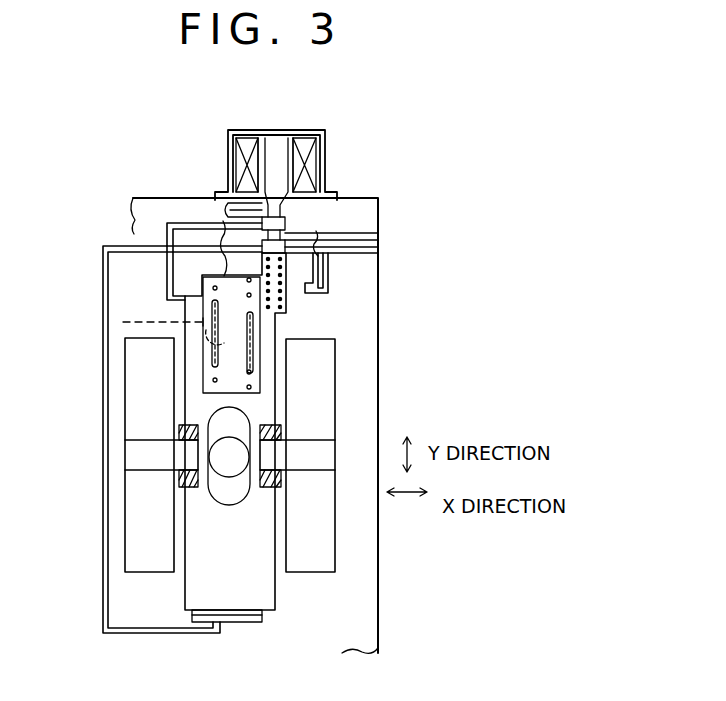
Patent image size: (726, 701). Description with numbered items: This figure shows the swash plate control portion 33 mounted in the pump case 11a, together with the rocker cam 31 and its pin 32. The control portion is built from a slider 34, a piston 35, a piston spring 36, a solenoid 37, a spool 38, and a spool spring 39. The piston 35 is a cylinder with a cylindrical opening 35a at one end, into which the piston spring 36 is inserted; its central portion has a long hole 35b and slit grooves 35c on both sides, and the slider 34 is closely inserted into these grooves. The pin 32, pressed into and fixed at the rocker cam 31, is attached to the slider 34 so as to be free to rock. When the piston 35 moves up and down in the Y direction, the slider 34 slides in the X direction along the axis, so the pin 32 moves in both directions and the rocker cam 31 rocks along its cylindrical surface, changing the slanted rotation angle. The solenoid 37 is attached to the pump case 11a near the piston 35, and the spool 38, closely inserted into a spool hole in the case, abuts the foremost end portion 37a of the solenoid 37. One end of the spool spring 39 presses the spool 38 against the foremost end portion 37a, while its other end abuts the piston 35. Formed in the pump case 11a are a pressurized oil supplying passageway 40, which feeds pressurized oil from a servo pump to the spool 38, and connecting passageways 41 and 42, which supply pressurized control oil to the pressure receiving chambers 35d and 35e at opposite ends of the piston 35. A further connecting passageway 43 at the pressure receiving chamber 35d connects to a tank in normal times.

The pump case 11a is at (367, 348).
The rocker cam 31 is at (135, 560).
The pin 32 is at (135, 455).
The swash plate control portion 33 is at (348, 155).
The slider 34 is at (283, 423).
The piston 35 is at (265, 588).
The cylindrical opening 35a is at (123, 322).
The long hole 35b is at (180, 425).
The slit grooves 35c is at (190, 488).
The pressure receiving chamber 35d is at (225, 296).
The pressure receiving chamber 35e is at (246, 622).
The piston spring 36 is at (250, 362).
The solenoid 37 is at (275, 131).
The foremost end portion 37a is at (290, 203).
The spool 38 is at (287, 227).
The spool spring 39 is at (284, 277).
The pressurized oil supplying passageway 40 is at (378, 236).
The connecting passageway 41 is at (175, 223).
The connecting passageway 42 is at (103, 246).
The connecting passageway 43 is at (224, 208).